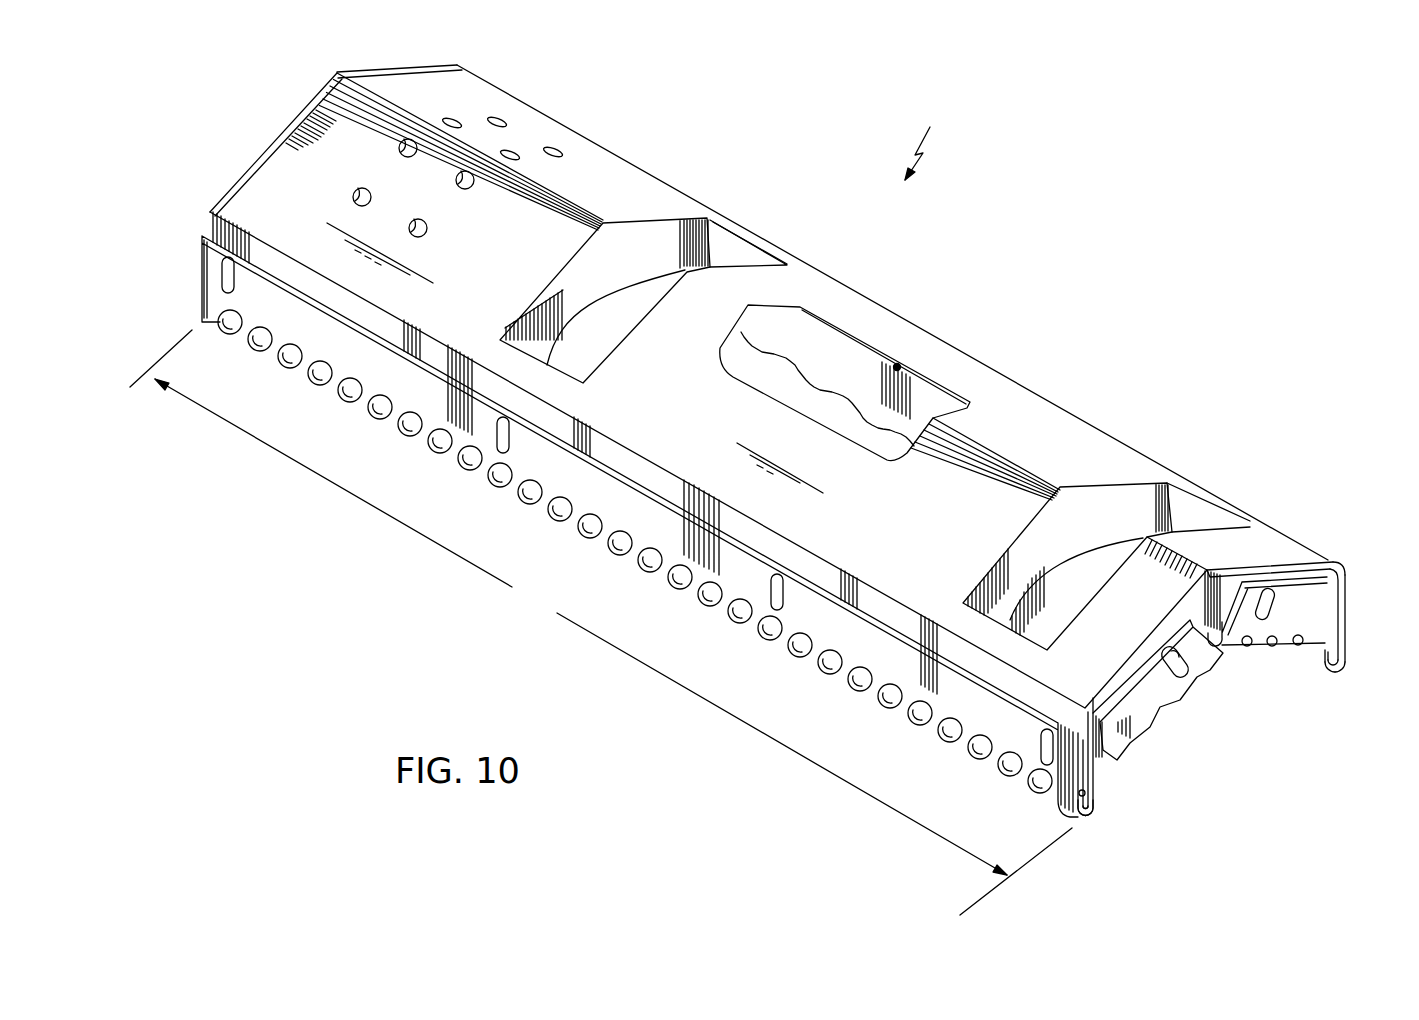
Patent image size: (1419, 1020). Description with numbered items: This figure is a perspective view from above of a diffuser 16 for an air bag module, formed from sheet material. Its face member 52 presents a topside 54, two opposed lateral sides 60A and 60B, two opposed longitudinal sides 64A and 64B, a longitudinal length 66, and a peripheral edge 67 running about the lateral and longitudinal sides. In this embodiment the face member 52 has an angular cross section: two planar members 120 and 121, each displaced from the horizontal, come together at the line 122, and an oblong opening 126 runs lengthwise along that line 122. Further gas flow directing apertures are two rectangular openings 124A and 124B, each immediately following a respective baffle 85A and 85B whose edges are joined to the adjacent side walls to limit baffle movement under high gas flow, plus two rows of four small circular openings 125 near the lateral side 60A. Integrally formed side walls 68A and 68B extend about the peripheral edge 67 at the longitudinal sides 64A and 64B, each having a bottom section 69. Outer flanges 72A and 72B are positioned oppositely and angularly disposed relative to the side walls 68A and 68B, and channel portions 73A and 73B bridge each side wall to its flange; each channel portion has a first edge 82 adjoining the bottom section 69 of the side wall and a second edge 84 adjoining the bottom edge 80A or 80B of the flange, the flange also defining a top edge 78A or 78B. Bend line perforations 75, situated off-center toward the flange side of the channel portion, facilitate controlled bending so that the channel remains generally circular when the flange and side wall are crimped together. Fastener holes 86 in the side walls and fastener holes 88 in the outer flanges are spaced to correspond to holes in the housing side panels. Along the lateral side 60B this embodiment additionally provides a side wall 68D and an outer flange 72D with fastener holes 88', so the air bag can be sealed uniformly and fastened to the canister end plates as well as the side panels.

The diffuser 16 is at (928, 140).
The face member 52 is at (1033, 400).
The topside 54 is at (890, 320).
The lateral side 60A is at (407, 68).
The lateral side 60B is at (1287, 565).
The longitudinal side 64A is at (320, 275).
The longitudinal side 64B is at (708, 206).
The longitudinal length 66 is at (601, 622).
The peripheral edge 67 is at (790, 250).
The side wall 68A is at (383, 320).
The side wall 68B is at (743, 255).
The side wall 68D is at (1215, 598).
The bottom section 69 is at (1285, 648).
The outer flange 72A is at (437, 407).
The outer flange 72B is at (1347, 612).
The outer flange 72D is at (1283, 617).
The channel portion 73A is at (1097, 822).
The channel portion 73B is at (1340, 674).
The bend line perforations 75 is at (720, 613).
The top edge 78A is at (627, 477).
The top edge 78B is at (1336, 570).
The bottom edge 80A is at (1073, 820).
The bottom edge 80B is at (1346, 630).
The first edge 82 is at (1334, 676).
The second edge 84 is at (1347, 658).
The baffle 85A is at (653, 237).
The baffle 85B is at (1057, 533).
The fastener hole 86 is at (900, 365).
The fastener hole 88 is at (603, 517).
The fastener hole 88' is at (1218, 672).
The planar member 120 is at (903, 517).
The planar member 121 is at (1027, 445).
The line 122 is at (977, 440).
The rectangular opening 124A is at (614, 313).
The rectangular opening 124B is at (1107, 567).
The small circular openings 125 is at (484, 134).
The oblong opening 126 is at (798, 385).